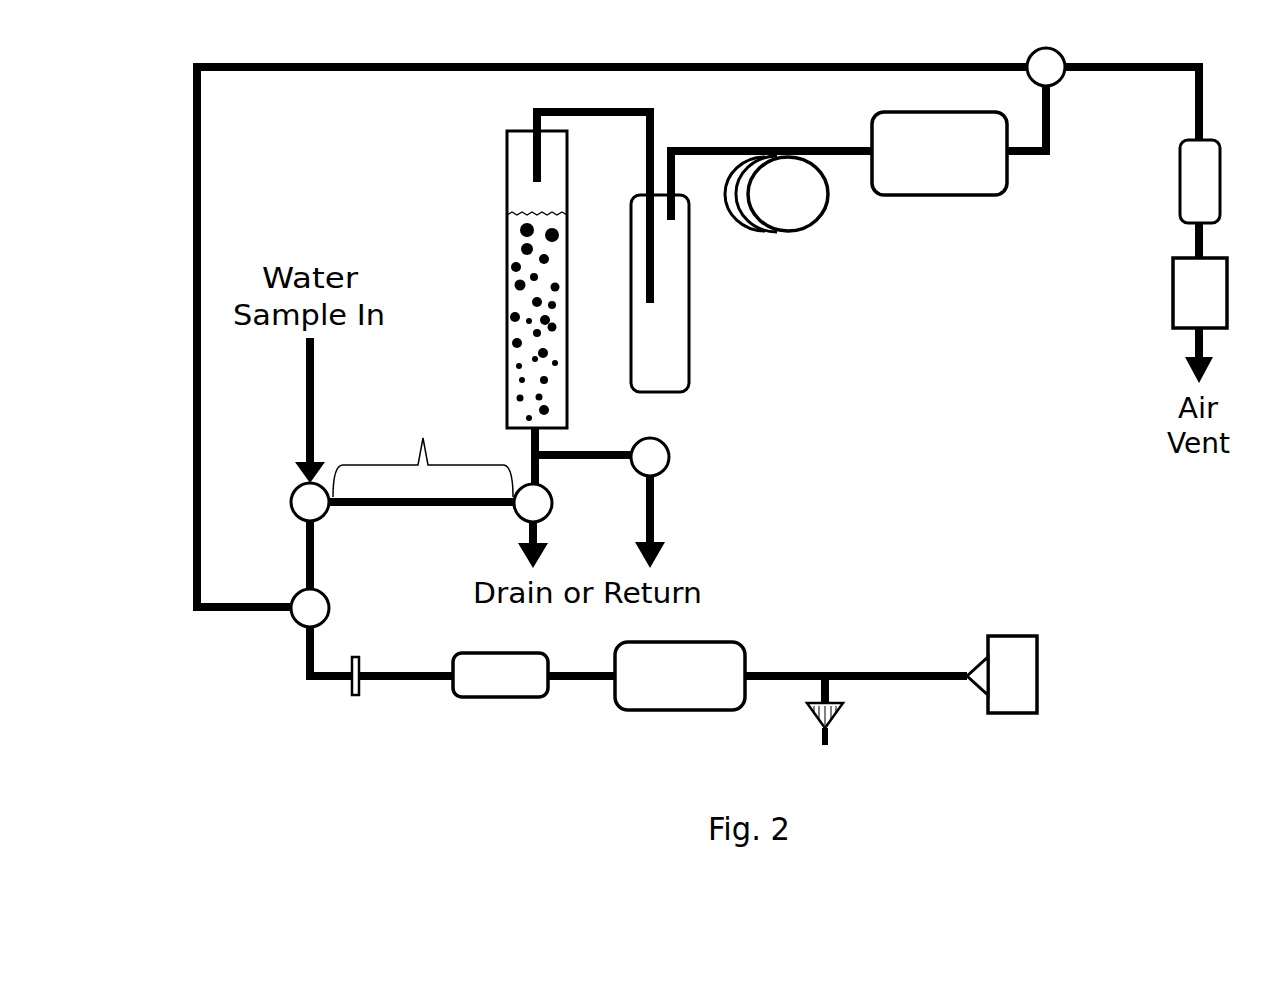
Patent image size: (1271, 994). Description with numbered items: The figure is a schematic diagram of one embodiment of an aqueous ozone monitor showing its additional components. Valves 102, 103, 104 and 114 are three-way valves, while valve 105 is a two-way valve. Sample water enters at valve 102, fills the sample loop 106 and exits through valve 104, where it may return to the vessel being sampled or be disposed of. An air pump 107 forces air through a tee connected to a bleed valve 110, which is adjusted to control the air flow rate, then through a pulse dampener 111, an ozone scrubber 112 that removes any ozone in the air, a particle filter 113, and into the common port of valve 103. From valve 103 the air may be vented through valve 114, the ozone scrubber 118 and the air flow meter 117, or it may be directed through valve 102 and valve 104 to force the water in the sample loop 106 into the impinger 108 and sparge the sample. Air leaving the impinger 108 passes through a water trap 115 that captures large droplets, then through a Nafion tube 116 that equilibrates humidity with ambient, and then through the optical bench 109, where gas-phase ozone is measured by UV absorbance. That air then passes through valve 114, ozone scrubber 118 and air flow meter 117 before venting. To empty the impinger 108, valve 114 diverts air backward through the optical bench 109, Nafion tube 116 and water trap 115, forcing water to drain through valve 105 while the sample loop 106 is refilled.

The valve 102 is at (323, 522).
The valve 103 is at (290, 622).
The valve 104 is at (513, 510).
The valve 105 is at (672, 452).
The sample loop 106 is at (423, 446).
The air pump 107 is at (1038, 678).
The impinger 108 is at (505, 258).
The optical bench 109 is at (939, 153).
The bleed valve 110 is at (838, 715).
The pulse dampener 111 is at (680, 676).
The ozone scrubber 112 is at (500, 675).
The particle filter 113 is at (363, 682).
The valve 114 is at (1058, 82).
The water trap 115 is at (690, 287).
The Nafion tube 116 is at (827, 205).
The air flow meter 117 is at (1175, 292).
The ozone scrubber 118 is at (1180, 183).